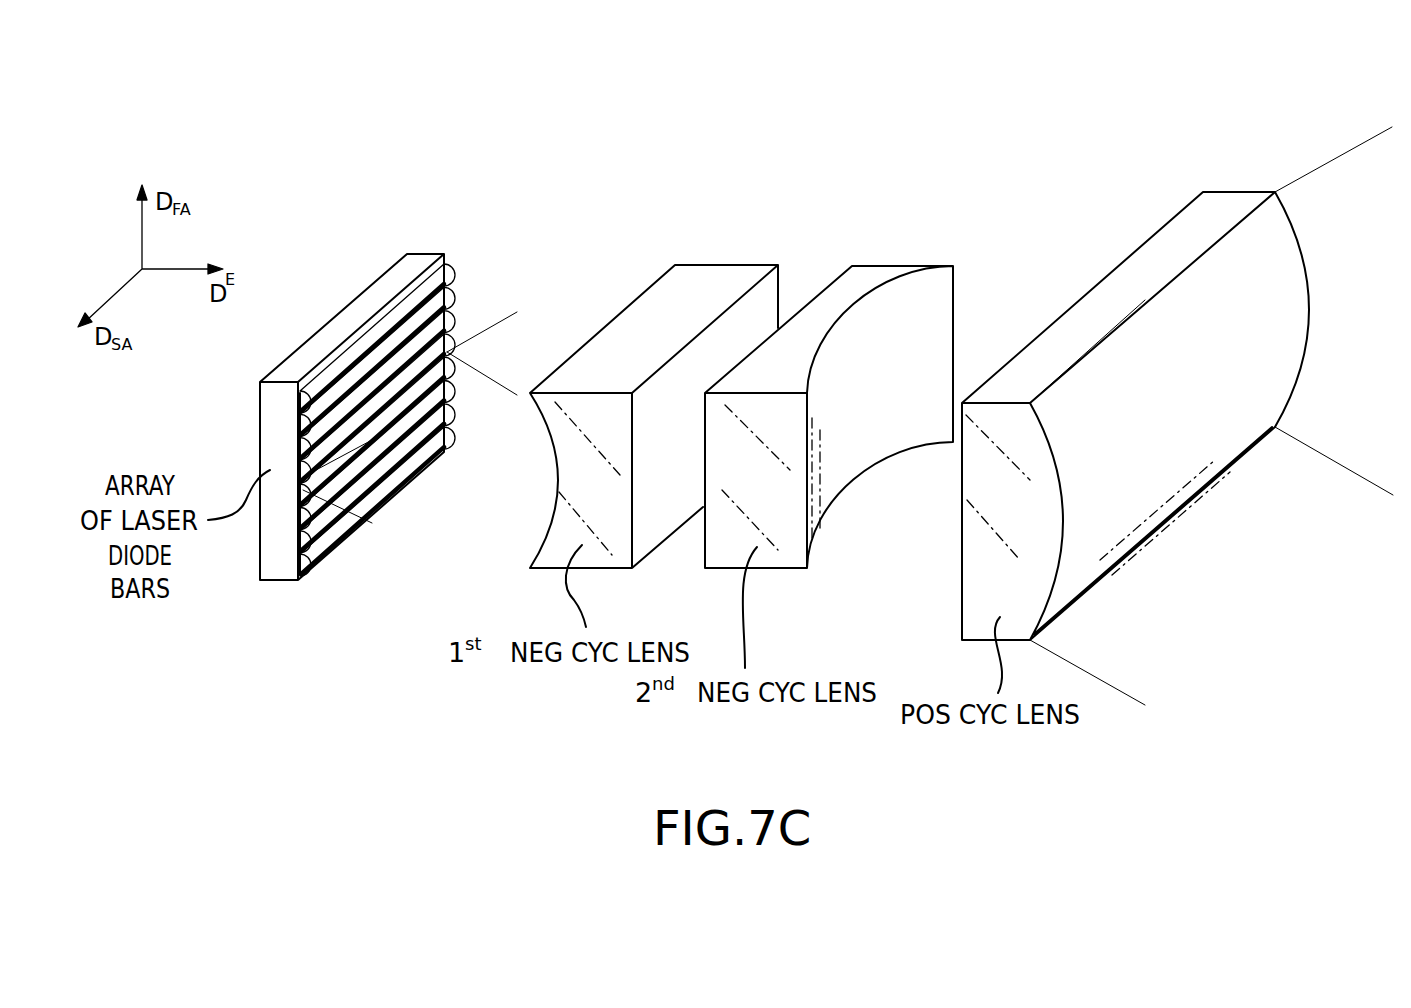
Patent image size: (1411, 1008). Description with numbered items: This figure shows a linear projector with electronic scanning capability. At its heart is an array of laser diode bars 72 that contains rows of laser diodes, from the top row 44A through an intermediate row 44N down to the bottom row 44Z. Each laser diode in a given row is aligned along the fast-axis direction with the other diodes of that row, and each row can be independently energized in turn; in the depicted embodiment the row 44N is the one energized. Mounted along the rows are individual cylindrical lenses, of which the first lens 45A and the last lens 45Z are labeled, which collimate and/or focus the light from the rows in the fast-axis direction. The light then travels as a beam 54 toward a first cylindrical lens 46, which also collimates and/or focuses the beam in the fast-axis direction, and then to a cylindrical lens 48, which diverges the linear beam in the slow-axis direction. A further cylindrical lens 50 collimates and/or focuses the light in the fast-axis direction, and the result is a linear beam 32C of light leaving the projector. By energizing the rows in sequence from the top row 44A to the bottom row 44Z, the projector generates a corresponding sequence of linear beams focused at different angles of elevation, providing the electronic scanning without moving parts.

The array of laser diode bars 72 is at (338, 312).
The top laser diode row 44A is at (422, 292).
The laser diode row 44N is at (452, 437).
The bottom laser diode row 44Z is at (325, 542).
The cylindrical lens 45A is at (465, 274).
The cylindrical lens 45Z is at (386, 490).
The laser beam from array 54 is at (515, 343).
The cylindrical lens 46 is at (723, 258).
The cylindrical lens 48 is at (895, 258).
The cylindrical lens 50 is at (1130, 245).
The linear beam 32C is at (1318, 165).